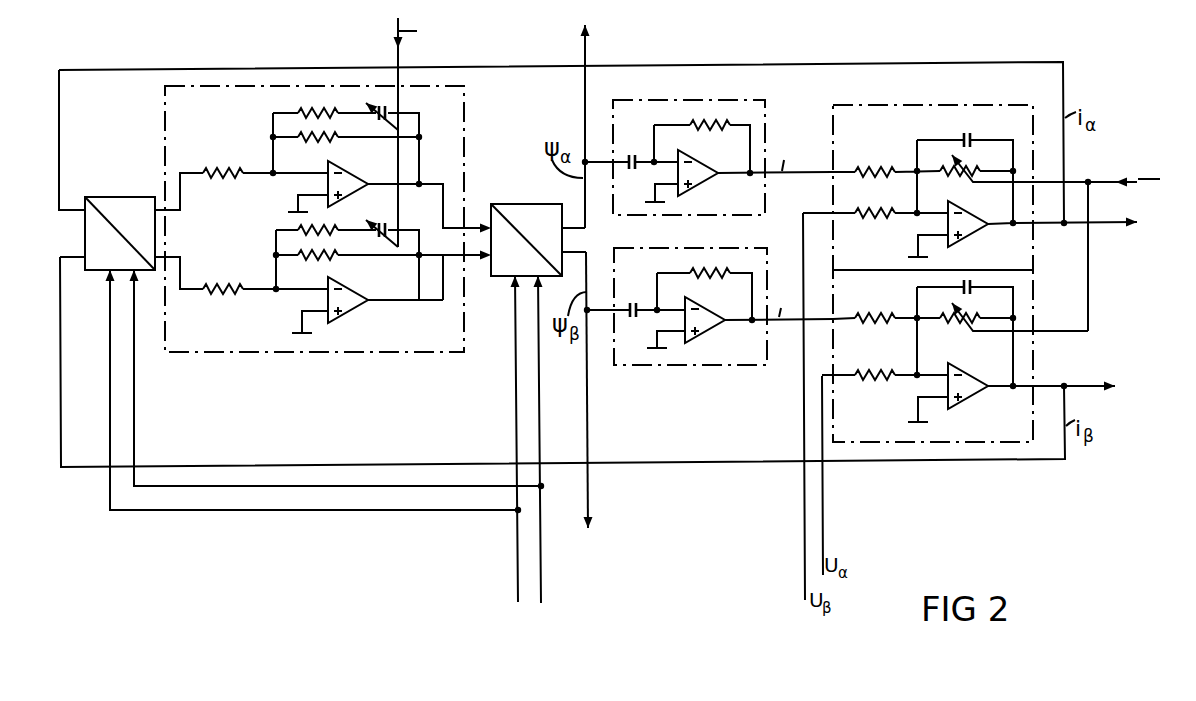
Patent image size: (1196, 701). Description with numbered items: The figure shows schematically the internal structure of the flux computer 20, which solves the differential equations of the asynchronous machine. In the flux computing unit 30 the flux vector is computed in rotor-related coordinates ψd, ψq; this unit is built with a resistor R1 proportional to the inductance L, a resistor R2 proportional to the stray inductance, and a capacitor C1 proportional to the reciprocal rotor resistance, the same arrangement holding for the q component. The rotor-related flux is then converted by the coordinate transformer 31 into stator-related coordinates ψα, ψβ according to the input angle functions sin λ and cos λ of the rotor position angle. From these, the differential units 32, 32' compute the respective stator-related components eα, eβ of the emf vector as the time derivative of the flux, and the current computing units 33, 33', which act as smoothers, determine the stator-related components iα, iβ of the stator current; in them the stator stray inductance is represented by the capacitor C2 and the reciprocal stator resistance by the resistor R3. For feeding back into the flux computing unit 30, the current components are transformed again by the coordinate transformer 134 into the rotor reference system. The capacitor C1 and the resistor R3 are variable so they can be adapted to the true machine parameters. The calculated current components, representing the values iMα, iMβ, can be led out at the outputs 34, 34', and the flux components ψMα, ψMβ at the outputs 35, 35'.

The flux computer 20 is at (303, 566).
The coordinate transformer 134 is at (118, 197).
The flux computing unit 30 is at (323, 200).
The coordinate transformer 31 is at (515, 204).
The differential unit 32 is at (709, 152).
The differential unit 32' is at (710, 327).
The current computing unit 33 is at (984, 201).
The current computing unit 33' is at (955, 356).
The output 34 is at (1096, 234).
The output 34' is at (1084, 376).
The output 35 is at (588, 125).
The output 35' is at (611, 393).
The resistor R1 is at (300, 228).
The resistor R2 is at (289, 248).
The resistor R3 is at (957, 176).
The capacitor C1 is at (384, 224).
The capacitor C2 is at (947, 96).